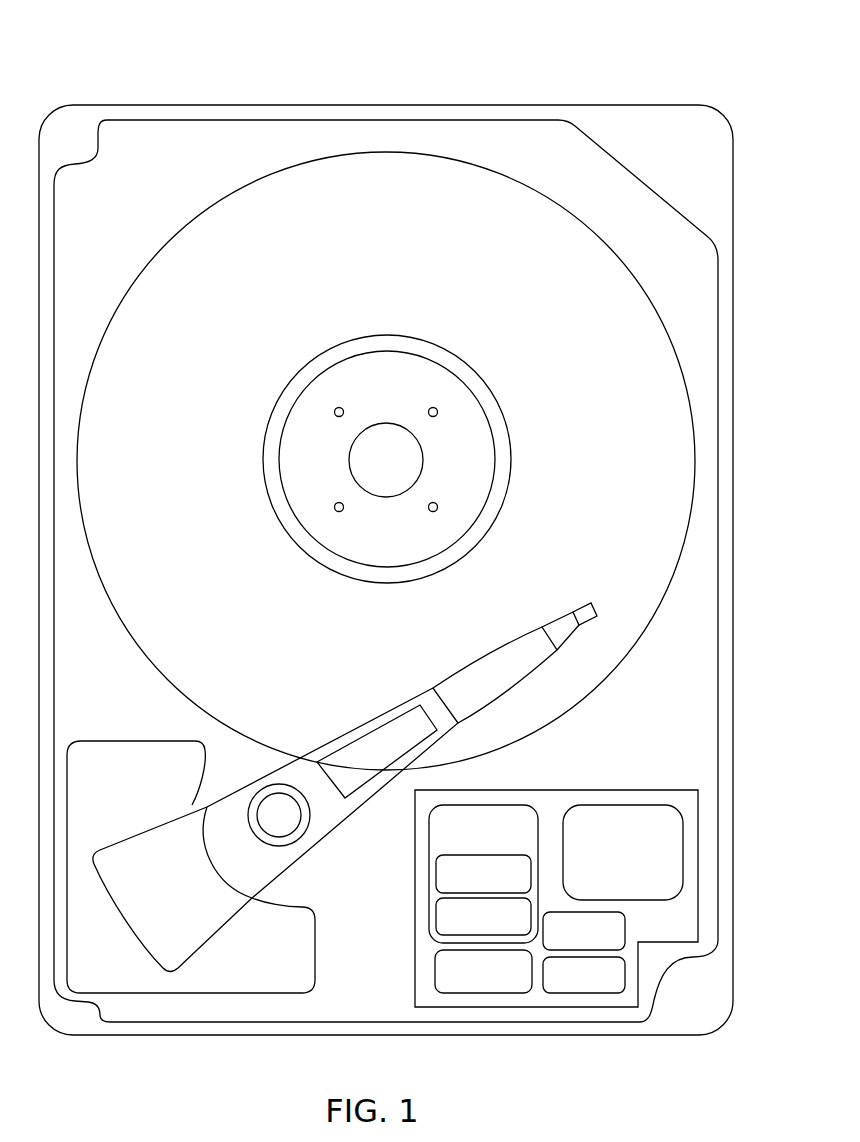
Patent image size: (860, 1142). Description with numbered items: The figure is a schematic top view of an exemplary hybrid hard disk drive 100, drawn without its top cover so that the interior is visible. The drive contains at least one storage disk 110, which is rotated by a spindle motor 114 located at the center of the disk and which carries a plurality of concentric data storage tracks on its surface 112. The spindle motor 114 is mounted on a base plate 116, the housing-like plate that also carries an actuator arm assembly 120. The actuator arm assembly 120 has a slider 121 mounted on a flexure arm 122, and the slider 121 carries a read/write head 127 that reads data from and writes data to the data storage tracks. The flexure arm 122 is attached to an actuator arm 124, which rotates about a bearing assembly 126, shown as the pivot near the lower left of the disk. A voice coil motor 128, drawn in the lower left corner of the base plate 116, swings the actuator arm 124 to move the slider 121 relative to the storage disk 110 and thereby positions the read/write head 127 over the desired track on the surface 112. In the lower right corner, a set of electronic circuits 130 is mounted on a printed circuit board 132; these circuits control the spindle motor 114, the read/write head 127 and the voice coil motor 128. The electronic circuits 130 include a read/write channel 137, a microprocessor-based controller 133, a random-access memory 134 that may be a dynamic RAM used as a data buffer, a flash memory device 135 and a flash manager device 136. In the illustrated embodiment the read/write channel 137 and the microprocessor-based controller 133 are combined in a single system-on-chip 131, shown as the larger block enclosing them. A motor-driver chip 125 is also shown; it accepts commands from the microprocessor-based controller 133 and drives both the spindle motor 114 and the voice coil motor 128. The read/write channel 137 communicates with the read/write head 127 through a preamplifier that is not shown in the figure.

The hybrid hard disk drive 100 is at (132, 75).
The storage disk 110 is at (168, 242).
The surface of storage disk 112 is at (158, 441).
The spindle motor 114 is at (480, 400).
The base plate 116 is at (718, 596).
The actuator arm assembly 120 is at (364, 638).
The slider 121 is at (593, 604).
The flexure arm 122 is at (553, 617).
The actuator arm 124 is at (457, 673).
The motor-driver chip 125 is at (503, 983).
The bearing assembly 126 is at (308, 856).
The read/write head 127 is at (586, 582).
The voice coil motor 128 is at (316, 935).
The electronic circuits 130 is at (562, 803).
The system-on-chip 131 is at (503, 846).
The printed circuit board 132 is at (634, 790).
The microprocessor-based controller 133 is at (503, 886).
The random-access memory 134 is at (604, 943).
The flash memory device 135 is at (643, 866).
The flash manager device 136 is at (604, 986).
The read/write channel 137 is at (503, 930).